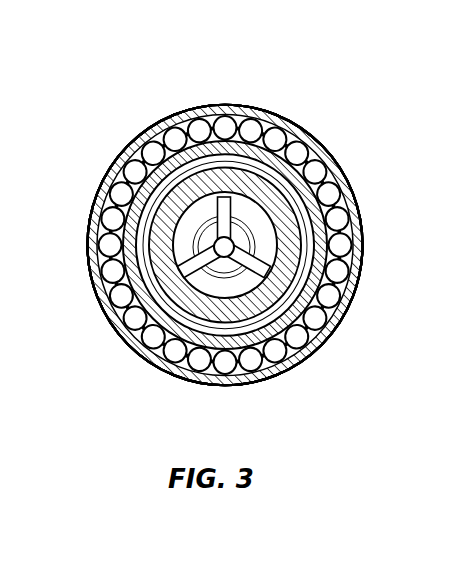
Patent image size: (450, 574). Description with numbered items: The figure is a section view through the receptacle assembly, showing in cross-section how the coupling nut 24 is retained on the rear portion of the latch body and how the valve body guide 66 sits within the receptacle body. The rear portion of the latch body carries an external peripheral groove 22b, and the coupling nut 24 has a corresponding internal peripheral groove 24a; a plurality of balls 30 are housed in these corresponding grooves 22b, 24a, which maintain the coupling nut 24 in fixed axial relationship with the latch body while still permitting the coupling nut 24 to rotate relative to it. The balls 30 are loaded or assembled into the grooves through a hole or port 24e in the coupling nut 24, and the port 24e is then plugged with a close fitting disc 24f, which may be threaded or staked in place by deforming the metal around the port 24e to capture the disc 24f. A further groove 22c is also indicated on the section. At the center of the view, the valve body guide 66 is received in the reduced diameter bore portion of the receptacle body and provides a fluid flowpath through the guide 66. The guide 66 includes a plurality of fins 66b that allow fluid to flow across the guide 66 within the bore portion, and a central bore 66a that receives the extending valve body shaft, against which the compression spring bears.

The coupling nut 24 is at (303, 130).
The internal peripheral groove 24a is at (122, 338).
The port 24e is at (213, 108).
The close fitting disc 24f is at (222, 107).
The external peripheral groove 22b is at (102, 260).
The housing portion 22c is at (269, 245).
The valve body guide 66 is at (110, 202).
The central bore 66a is at (190, 193).
The fins 66b is at (305, 207).
The balls 30 is at (352, 330).